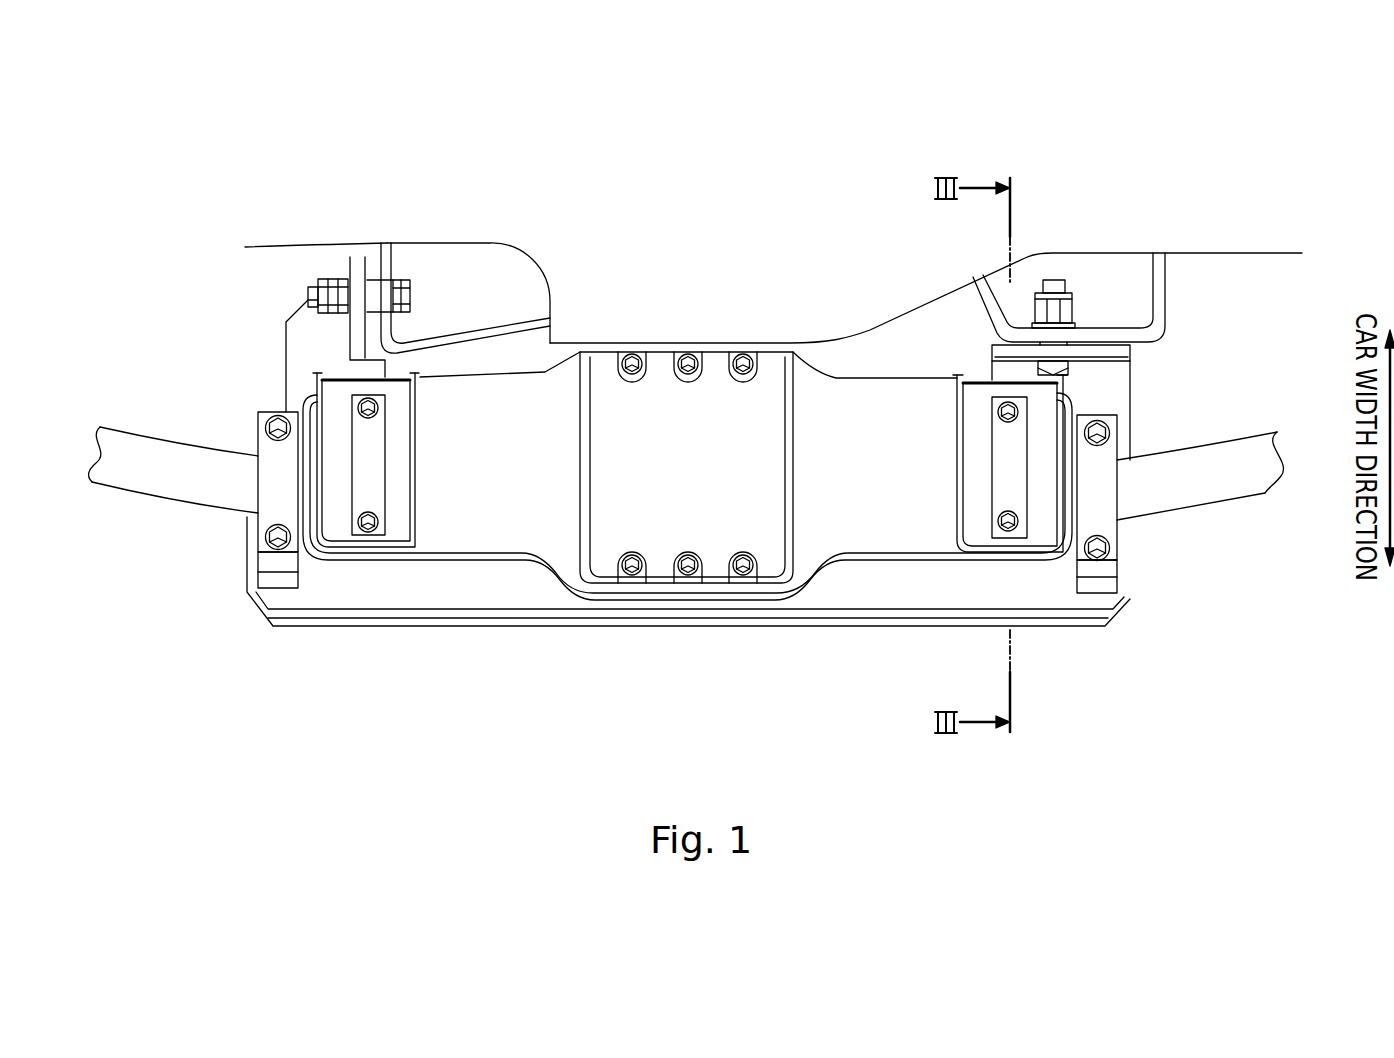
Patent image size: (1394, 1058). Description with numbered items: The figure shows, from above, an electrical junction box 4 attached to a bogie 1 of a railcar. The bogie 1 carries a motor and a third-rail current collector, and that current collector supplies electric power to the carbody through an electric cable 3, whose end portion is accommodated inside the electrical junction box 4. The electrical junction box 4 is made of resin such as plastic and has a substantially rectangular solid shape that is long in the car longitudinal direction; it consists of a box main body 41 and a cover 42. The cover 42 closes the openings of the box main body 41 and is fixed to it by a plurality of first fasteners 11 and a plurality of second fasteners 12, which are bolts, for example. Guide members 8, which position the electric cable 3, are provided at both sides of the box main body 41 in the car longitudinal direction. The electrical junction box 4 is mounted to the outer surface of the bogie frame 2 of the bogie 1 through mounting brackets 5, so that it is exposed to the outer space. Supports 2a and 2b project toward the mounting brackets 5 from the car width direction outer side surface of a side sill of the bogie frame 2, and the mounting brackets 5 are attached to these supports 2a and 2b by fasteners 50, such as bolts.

The bogie 1 is at (337, 242).
The bogie frame 2 is at (1102, 252).
The support 2a is at (380, 252).
The support 2b is at (1158, 292).
The electric cable 3 is at (107, 484).
The electrical junction box 4 is at (316, 612).
The mounting bracket 5 is at (307, 342).
The guide member 8 is at (277, 582).
The first fastener 11 is at (372, 514).
The second fastener 12 is at (631, 566).
The box main body 41 is at (363, 588).
The cover 42 is at (1018, 570).
The fastener 50 is at (411, 295).